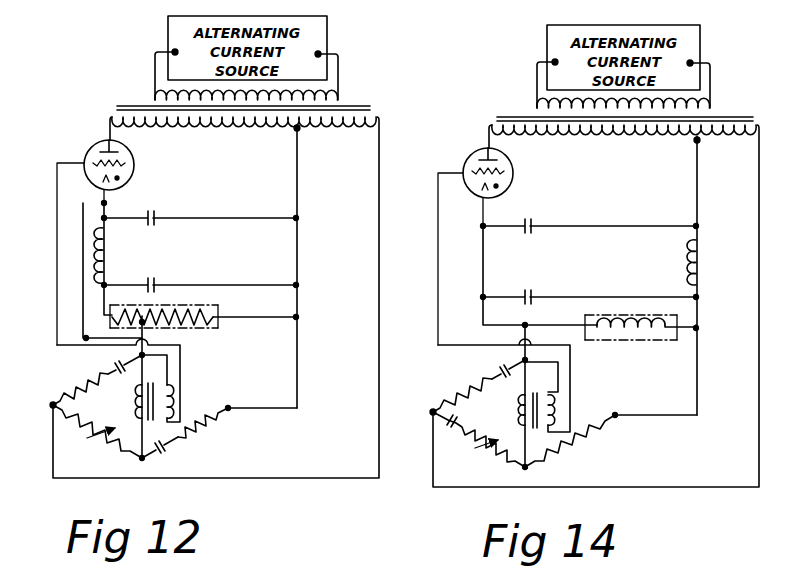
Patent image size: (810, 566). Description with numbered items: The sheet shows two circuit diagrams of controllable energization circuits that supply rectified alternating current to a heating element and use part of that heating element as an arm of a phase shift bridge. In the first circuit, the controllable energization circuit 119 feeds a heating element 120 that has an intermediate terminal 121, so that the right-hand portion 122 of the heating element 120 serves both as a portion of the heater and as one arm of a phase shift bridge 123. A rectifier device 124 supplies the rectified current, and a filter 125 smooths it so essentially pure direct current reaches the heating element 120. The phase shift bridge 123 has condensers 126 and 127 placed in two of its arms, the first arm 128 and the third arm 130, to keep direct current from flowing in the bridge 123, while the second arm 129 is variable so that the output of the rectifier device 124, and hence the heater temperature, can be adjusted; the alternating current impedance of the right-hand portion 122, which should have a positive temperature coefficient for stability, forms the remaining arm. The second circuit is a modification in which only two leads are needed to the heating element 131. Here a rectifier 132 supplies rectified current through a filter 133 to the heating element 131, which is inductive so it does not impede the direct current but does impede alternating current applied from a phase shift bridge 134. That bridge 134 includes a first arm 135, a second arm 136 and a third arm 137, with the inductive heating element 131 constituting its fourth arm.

In FIG. 12, the controllable energization circuit 119 is at (220, 266).
In FIG. 12, the heating element 120 is at (148, 316).
In FIG. 12, the intermediate terminal 121 is at (152, 324).
In FIG. 12, the right-hand portion of heating element 122 is at (208, 314).
In FIG. 12, the phase shift bridge 123 is at (164, 413).
In FIG. 12, the rectifier device 124 is at (135, 161).
In FIG. 12, the filter 125 is at (120, 255).
In FIG. 12, the condenser 126 is at (113, 370).
In FIG. 12, the condenser 127 is at (170, 449).
In FIG. 12, the first arm 128 is at (75, 378).
In FIG. 12, the second arm 129 is at (111, 441).
In FIG. 12, the third arm 130 is at (205, 432).
In FIG. 14, the heating element 131 is at (622, 340).
In FIG. 14, the rectifier 132 is at (514, 171).
In FIG. 14, the filter 133 is at (591, 275).
In FIG. 14, the phase shift bridge 134 is at (642, 321).
In FIG. 14, the first arm 135 is at (473, 381).
In FIG. 12, the second arm 136 is at (133, 401).
In FIG. 14, the second arm 136 is at (497, 458).
In FIG. 14, the third arm 137 is at (582, 441).